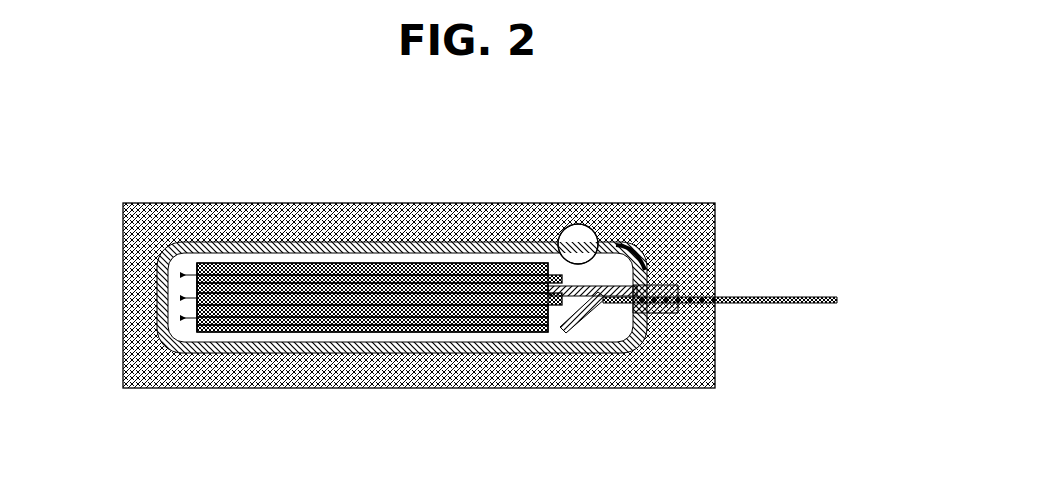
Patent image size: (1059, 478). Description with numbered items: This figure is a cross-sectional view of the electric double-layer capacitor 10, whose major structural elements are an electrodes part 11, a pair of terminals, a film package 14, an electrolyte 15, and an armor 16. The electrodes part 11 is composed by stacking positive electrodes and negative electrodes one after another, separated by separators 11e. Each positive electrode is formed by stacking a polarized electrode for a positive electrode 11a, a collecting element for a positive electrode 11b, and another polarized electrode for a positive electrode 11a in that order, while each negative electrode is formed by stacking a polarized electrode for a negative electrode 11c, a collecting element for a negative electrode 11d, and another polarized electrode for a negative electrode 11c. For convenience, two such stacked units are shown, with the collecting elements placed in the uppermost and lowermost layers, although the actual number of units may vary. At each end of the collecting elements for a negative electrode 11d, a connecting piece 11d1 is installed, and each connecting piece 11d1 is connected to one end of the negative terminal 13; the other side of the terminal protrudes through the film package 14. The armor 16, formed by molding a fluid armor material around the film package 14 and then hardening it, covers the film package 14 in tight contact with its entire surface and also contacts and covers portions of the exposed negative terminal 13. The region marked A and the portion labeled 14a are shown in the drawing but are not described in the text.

The electric double-layer capacitor 10 is at (160, 204).
The armor 16 is at (200, 225).
The film package 14 is at (493, 242).
The sealing portion of pouch 14a is at (660, 288).
The electrolyte 15 is at (618, 262).
The region A is at (573, 227).
The negative terminal 13 is at (780, 297).
The electrodes part 11 is at (349, 296).
The polarized electrode for a positive electrode 11a is at (292, 276).
The collecting element for a positive electrode 11b is at (330, 292).
The polarized electrode for a negative electrode 11c is at (368, 307).
The collecting element for a negative electrode 11d is at (407, 320).
The connecting piece 11d1 is at (581, 332).
The separator 11e is at (182, 275).